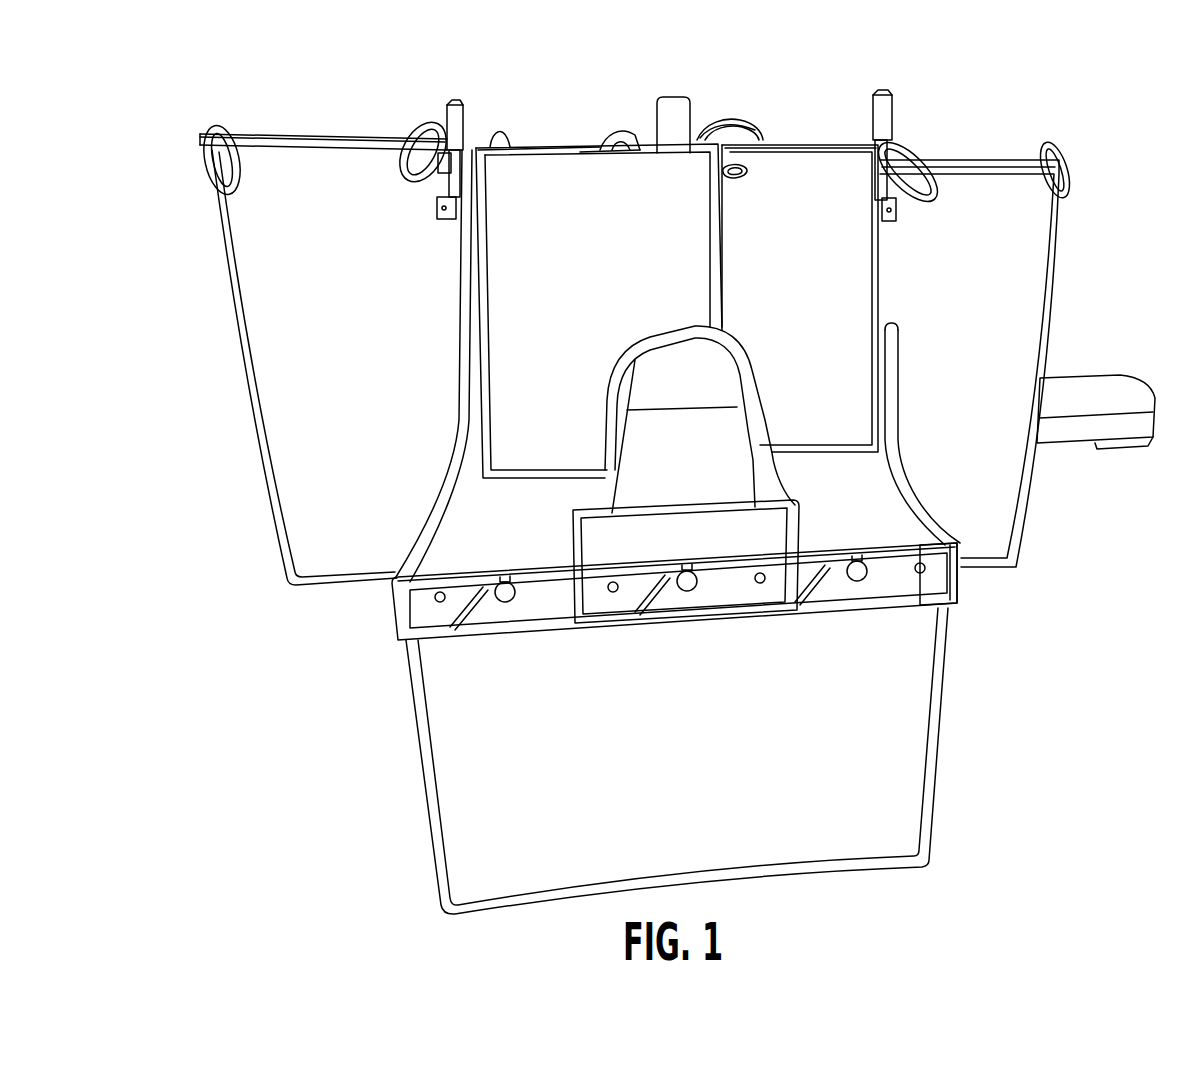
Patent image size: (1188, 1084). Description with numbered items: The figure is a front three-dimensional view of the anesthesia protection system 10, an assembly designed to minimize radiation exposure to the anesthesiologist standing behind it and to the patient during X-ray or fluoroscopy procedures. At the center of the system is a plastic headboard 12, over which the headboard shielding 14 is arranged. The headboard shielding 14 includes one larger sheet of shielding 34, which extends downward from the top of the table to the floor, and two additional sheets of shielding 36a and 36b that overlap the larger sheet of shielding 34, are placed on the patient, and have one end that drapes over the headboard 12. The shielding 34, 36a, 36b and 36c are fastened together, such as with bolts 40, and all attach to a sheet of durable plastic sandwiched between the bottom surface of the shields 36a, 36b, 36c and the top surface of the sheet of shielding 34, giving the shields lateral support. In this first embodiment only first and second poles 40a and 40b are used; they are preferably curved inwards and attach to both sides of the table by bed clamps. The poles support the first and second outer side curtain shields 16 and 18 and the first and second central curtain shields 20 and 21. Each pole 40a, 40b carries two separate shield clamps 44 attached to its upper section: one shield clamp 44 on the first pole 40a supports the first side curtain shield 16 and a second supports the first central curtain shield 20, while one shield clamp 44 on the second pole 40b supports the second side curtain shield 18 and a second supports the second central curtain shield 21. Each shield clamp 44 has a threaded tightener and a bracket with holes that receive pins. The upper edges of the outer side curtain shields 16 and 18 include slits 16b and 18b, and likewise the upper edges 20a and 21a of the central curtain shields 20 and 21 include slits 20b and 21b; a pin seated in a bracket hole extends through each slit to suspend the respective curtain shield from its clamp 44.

The anesthesia protection system 10 is at (167, 375).
The plastic headboard 12 is at (617, 603).
The headboard shielding 14 is at (982, 667).
The first outer side curtain shield 16 is at (303, 173).
The slit 16b is at (362, 140).
The second outer side curtain shield 18 is at (1010, 193).
The slit 18b is at (965, 167).
The first central curtain shield 20 is at (530, 207).
The upper edge 20a is at (570, 150).
The slit 20b is at (588, 150).
The second central curtain shield 21 is at (787, 207).
The upper edge 21a is at (737, 123).
The slit 21b is at (805, 140).
The larger sheet of shielding 34 is at (890, 737).
The sheet of shielding 36a is at (420, 592).
The sheet of shielding 36b is at (927, 557).
The shield 36c is at (717, 540).
The bolts 40 is at (445, 599).
The first pole 40a is at (463, 237).
The second pole 40b is at (887, 117).
The shield clamp 44 is at (442, 210).